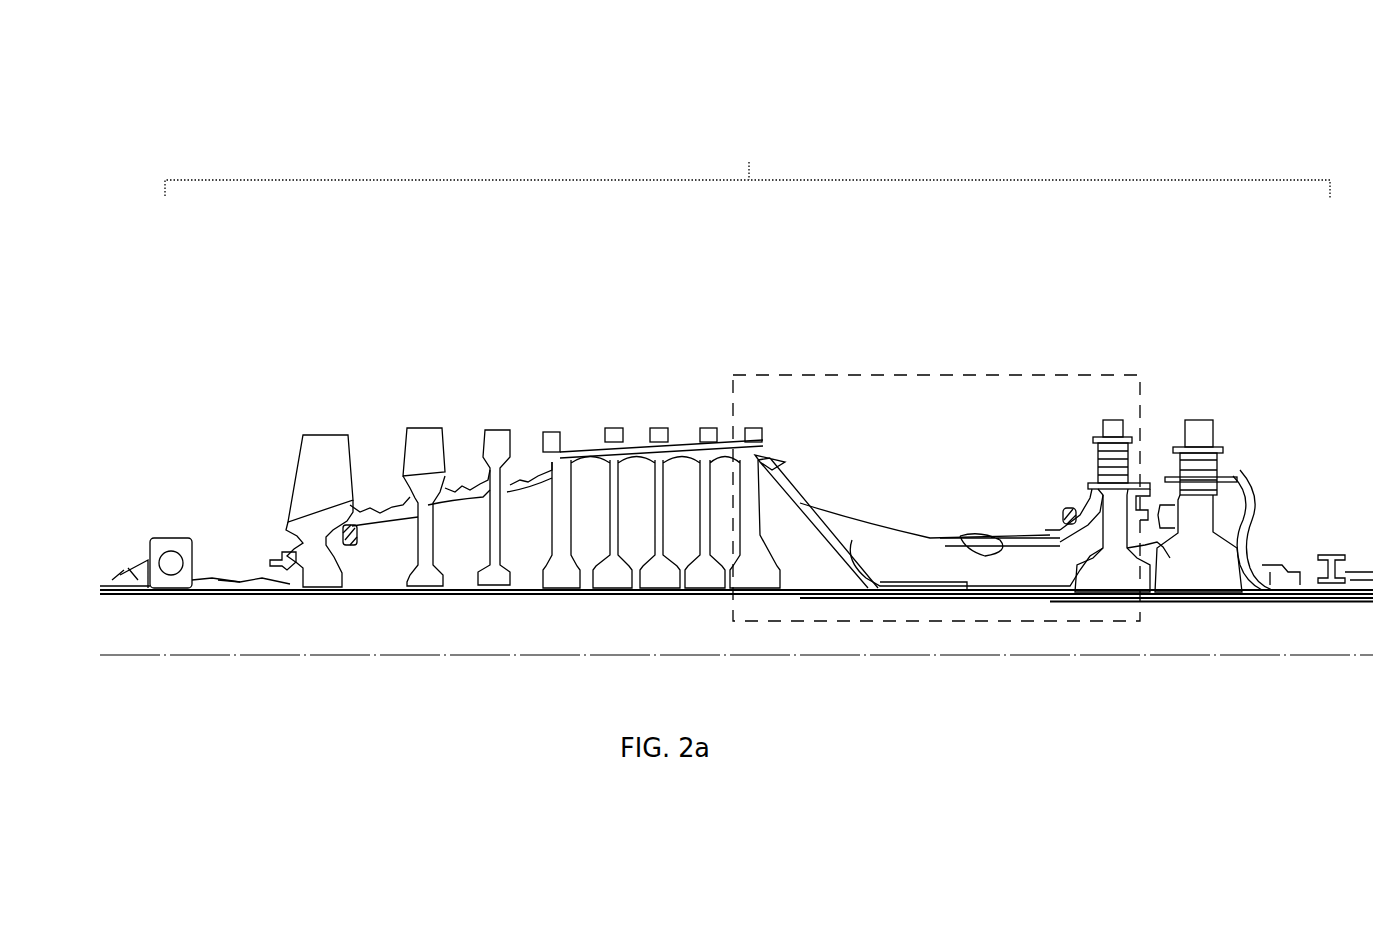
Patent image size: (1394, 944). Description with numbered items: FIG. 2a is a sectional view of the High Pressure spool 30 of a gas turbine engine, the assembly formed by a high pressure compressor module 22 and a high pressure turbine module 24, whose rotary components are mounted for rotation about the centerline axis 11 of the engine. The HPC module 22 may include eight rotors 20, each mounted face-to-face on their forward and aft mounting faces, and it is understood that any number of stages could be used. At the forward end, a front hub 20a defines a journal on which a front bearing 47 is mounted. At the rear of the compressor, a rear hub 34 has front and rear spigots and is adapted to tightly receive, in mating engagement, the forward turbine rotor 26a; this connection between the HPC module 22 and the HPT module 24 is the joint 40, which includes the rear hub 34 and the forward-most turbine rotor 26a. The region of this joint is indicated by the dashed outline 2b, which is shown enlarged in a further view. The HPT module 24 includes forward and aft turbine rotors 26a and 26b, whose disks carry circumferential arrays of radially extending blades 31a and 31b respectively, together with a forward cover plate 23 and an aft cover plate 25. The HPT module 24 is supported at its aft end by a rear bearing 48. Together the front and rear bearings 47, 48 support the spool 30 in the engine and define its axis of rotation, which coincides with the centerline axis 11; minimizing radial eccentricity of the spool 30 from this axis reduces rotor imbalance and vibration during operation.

The centerline axis 11 is at (202, 660).
The High Pressure spool 30 is at (747, 158).
The detail region of FIG. 2b is at (1003, 368).
The front bearing 47 is at (168, 540).
The rotors 20 is at (474, 362).
The front hub 20a is at (218, 580).
The high pressure compressor module 22 is at (504, 275).
The rear hub 34 is at (830, 520).
The joint 40 is at (992, 545).
The forward cover plate 23 is at (1085, 500).
The high pressure turbine module 24 is at (1171, 394).
The forward turbine rotor 26a is at (1080, 418).
The blades 31a is at (1110, 418).
The aft turbine rotor 26b is at (1254, 445).
The blades 31b is at (1202, 403).
The aft cover plate 25 is at (1240, 495).
The rear bearing 48 is at (1330, 557).